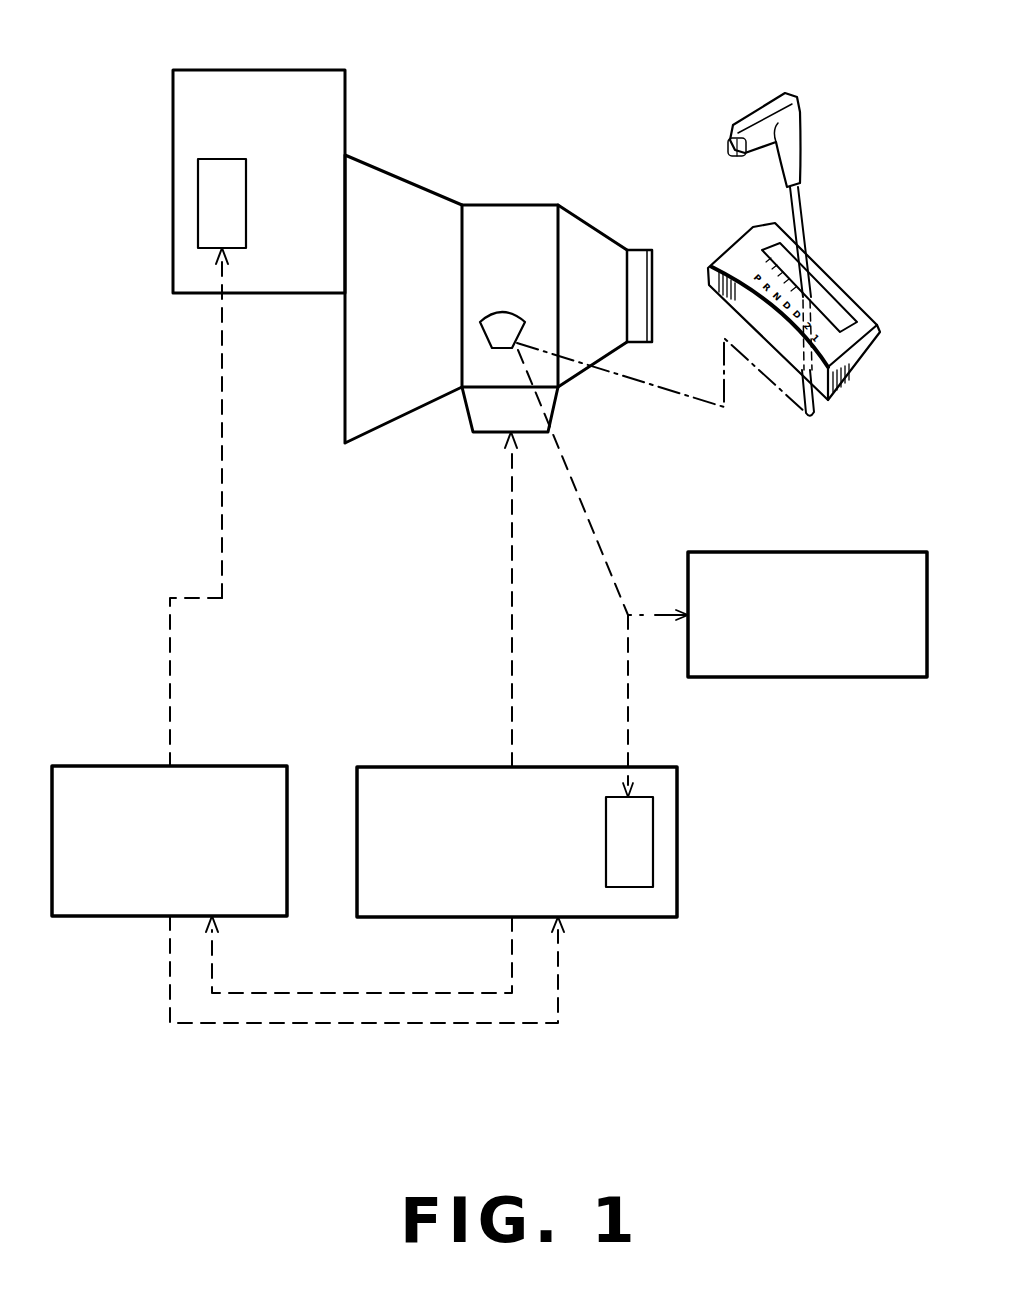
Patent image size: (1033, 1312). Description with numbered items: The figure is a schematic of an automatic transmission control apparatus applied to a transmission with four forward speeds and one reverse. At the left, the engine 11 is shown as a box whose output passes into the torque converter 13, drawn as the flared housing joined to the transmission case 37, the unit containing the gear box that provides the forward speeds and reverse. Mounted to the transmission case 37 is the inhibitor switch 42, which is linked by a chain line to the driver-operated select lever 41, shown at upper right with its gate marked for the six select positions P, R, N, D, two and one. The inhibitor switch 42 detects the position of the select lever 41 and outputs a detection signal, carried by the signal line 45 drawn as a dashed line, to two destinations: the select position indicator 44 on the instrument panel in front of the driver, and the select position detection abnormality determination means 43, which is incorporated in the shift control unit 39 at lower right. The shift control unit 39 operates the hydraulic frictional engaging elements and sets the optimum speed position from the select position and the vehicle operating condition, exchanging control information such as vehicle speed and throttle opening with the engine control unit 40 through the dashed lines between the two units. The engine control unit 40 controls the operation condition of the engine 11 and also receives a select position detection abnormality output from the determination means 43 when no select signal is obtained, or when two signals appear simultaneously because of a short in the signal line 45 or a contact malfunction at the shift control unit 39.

The engine 11 is at (247, 77).
The torque converter 13 is at (398, 185).
The transmission case 37 is at (530, 210).
The shift control unit 39 is at (443, 767).
The engine control unit 40 is at (247, 766).
The select lever 41 is at (748, 113).
The inhibitor switch 42 is at (498, 345).
The select position detection abnormality determination means 43 is at (653, 835).
The select position indicator 44 is at (787, 552).
The signal line 45 is at (628, 697).